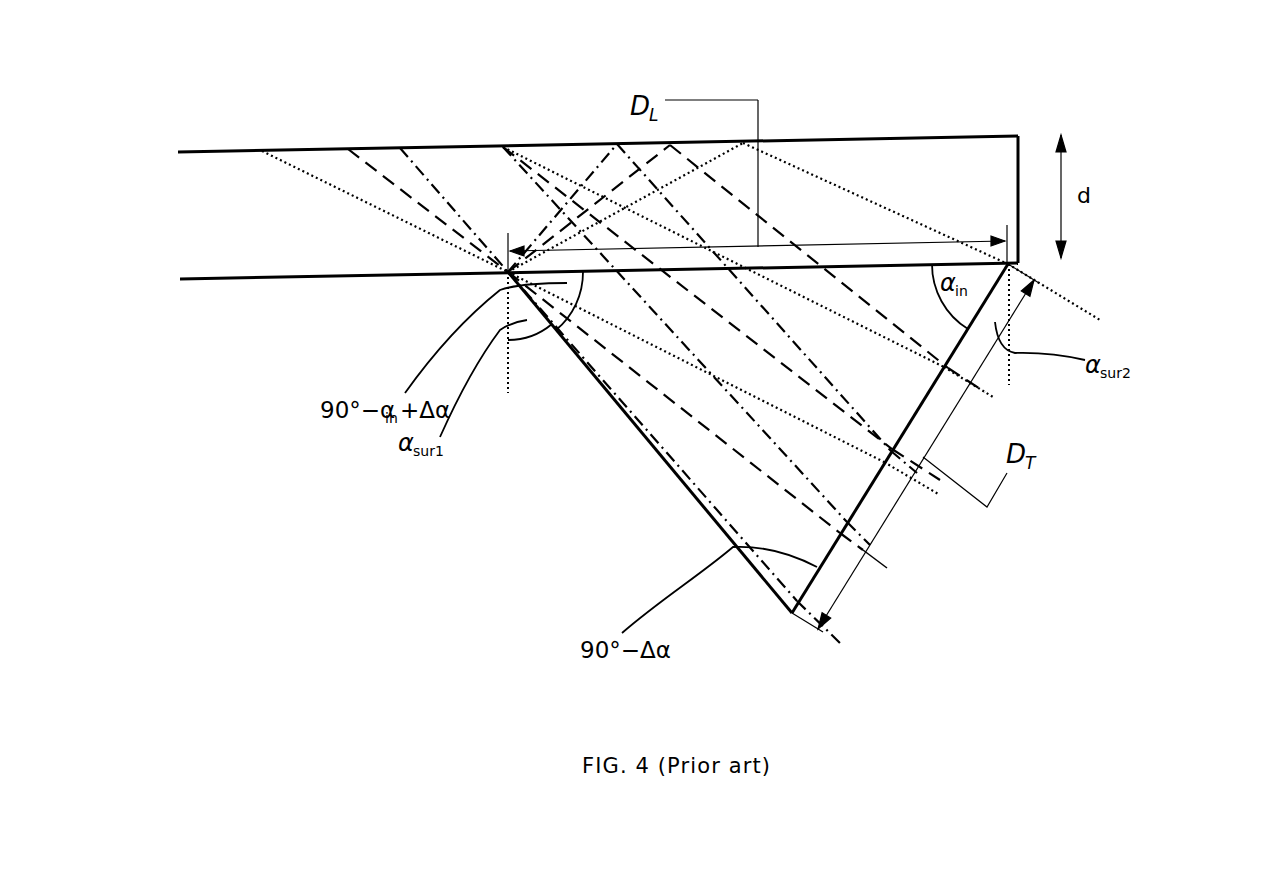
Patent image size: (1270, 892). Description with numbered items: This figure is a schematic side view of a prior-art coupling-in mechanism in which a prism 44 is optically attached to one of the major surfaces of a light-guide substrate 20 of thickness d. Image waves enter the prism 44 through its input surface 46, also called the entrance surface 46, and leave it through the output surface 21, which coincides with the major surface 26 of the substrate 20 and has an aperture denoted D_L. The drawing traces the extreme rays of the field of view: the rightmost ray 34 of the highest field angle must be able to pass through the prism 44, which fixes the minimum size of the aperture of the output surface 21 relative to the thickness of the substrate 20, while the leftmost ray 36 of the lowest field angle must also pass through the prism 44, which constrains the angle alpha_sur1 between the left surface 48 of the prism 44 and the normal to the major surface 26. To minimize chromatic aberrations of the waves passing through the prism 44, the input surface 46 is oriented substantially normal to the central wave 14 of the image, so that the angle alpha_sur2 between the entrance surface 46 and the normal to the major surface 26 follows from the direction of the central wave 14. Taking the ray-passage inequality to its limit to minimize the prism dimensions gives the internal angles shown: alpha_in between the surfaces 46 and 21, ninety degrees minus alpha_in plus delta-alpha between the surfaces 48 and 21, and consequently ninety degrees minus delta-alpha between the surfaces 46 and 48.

The central wave 14 is at (774, 438).
The substrate 20 is at (599, 295).
The output surface 21 is at (847, 265).
The major surface 26 is at (352, 278).
The rightmost ray 34 is at (1087, 311).
The leftmost ray 36 is at (657, 447).
The prism 44 is at (747, 490).
The input surface 46 is at (940, 377).
The left surface 48 is at (683, 490).